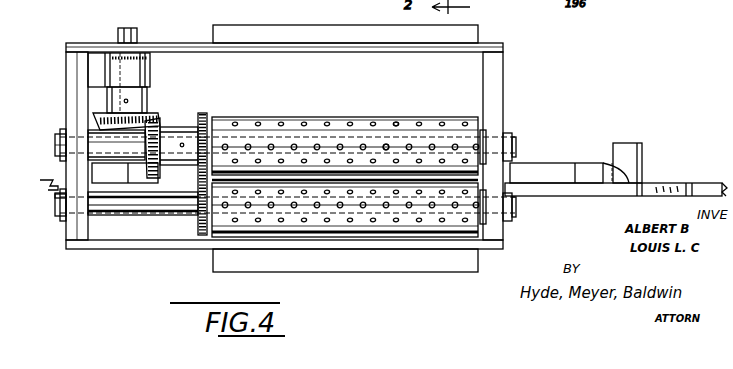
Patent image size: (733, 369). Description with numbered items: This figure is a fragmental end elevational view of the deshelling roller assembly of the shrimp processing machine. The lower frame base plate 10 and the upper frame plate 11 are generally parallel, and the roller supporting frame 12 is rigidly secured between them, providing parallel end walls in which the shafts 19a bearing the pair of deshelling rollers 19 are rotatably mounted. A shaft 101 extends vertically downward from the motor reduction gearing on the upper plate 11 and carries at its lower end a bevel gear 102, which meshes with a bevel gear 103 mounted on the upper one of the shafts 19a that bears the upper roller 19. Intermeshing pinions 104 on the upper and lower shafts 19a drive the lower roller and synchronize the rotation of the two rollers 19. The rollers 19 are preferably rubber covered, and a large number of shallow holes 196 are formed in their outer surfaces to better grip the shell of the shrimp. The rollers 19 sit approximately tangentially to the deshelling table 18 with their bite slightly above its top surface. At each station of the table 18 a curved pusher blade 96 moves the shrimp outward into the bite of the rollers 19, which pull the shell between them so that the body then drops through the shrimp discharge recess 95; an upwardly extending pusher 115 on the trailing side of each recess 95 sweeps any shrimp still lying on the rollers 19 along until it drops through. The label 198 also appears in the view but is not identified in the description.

The lower frame base plate 10 is at (222, 260).
The upper frame plate 11 is at (253, 30).
The roller supporting frame 12 is at (75, 81).
The deshelling table 18 is at (56, 184).
The deshelling rollers 19 is at (302, 120).
The roller shafts 19a is at (513, 150).
The shrimp discharge recess 95 is at (665, 190).
The pusher blade 96 is at (578, 152).
The shaft 101 is at (137, 36).
The bevel gear 102 is at (152, 93).
The bevel gear 103 is at (176, 127).
The pinions 104 is at (201, 113).
The pusher 115 is at (637, 143).
The drum perforations 196 is at (389, 142).
The shaft collar 198 is at (55, 208).